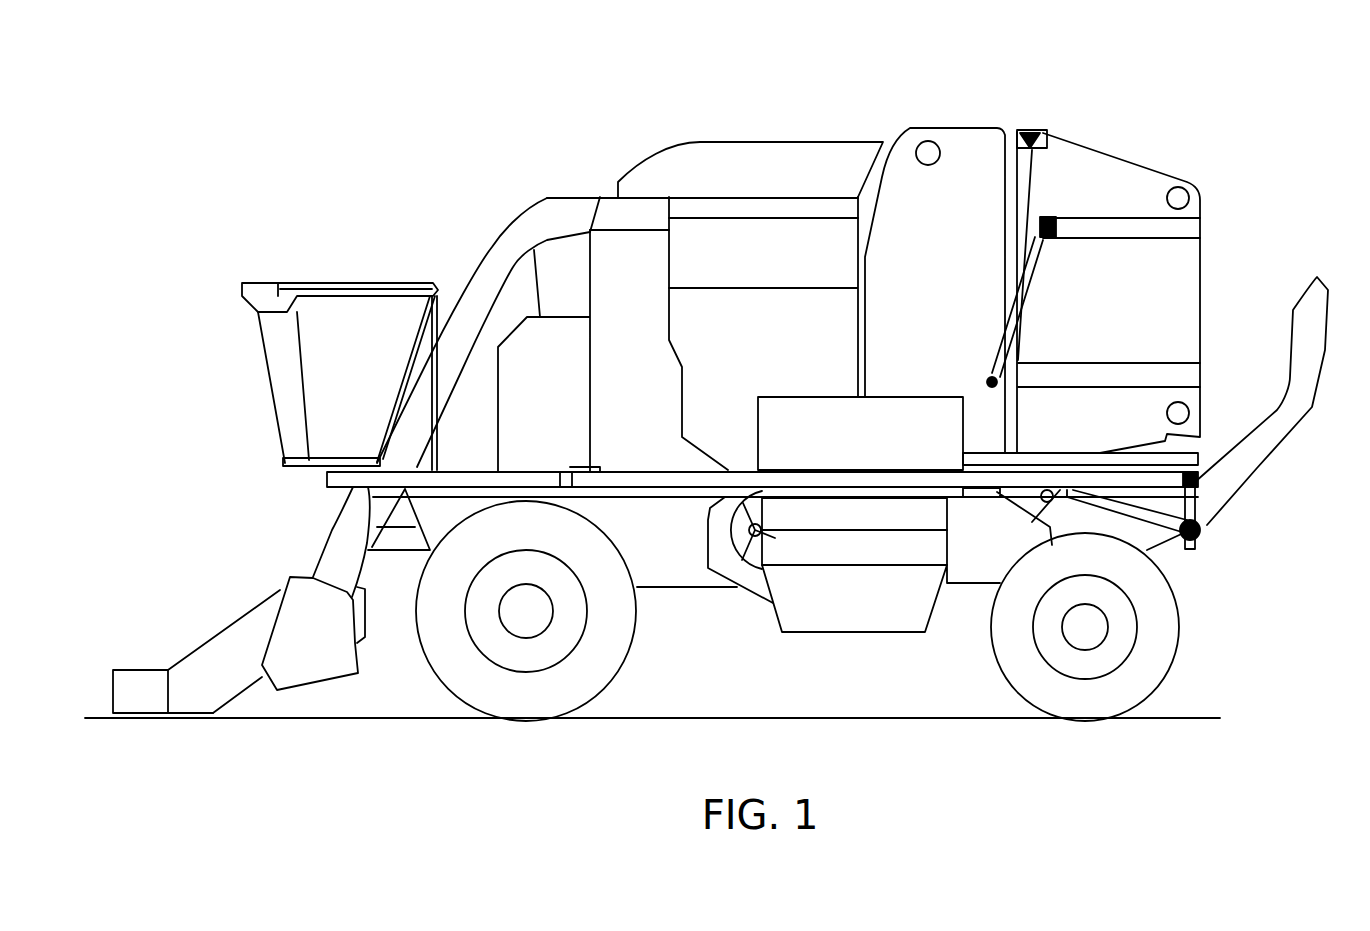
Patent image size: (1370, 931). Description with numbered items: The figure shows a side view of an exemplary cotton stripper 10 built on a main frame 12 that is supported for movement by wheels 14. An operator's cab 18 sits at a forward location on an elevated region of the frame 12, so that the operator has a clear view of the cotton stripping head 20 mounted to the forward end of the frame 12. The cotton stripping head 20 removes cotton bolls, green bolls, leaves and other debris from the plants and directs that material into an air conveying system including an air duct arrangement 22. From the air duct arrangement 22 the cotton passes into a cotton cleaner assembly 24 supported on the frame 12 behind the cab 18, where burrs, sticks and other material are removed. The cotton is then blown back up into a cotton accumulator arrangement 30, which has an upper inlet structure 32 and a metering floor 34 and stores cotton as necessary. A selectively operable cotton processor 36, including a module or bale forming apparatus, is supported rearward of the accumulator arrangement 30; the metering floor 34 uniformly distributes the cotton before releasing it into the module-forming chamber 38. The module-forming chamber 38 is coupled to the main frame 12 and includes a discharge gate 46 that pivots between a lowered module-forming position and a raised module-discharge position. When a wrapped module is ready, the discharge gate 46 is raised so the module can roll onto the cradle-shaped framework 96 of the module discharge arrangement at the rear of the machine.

The cotton stripper 10 is at (300, 170).
The main frame 12 is at (327, 478).
The wheels 14 is at (636, 640).
The operator's cab 18 is at (300, 285).
The cotton stripping head 20 is at (210, 645).
The air duct arrangement 22 is at (488, 254).
The cotton cleaner assembly 24 is at (550, 377).
The cotton accumulator arrangement 30 is at (635, 145).
The upper inlet structure 32 is at (735, 147).
The metering floor 34 is at (783, 320).
The cotton processor 36 is at (955, 117).
The module-forming chamber 38 is at (965, 298).
The discharge gate 46 is at (1172, 148).
The cradle-shaped framework 96 is at (1283, 420).